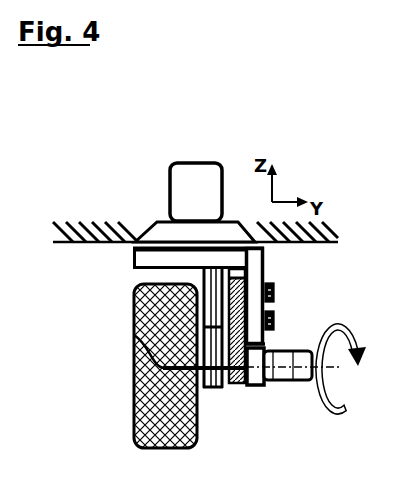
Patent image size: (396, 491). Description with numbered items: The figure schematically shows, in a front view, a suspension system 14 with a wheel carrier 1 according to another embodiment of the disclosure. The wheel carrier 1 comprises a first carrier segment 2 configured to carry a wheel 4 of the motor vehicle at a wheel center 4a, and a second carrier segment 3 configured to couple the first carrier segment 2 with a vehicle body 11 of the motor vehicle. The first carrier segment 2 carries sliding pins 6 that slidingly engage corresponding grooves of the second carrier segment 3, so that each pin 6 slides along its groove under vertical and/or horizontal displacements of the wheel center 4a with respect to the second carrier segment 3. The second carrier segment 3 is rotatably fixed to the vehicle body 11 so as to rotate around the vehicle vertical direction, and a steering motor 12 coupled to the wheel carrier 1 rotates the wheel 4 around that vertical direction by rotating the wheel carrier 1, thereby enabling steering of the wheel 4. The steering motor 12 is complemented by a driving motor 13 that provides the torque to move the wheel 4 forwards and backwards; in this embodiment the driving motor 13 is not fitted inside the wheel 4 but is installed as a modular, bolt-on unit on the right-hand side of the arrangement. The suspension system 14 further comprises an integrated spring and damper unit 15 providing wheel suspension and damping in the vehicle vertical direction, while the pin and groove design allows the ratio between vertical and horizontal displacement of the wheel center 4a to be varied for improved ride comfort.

The wheel carrier 1 is at (330, 279).
The first carrier segment 2 is at (232, 384).
The second carrier segment 3 is at (266, 261).
The wheel 4 is at (133, 415).
The wheel center 4a is at (134, 335).
The sliding pin 6 is at (275, 293).
The vehicle body 11 is at (80, 221).
The steering motor 12 is at (168, 214).
The driving motor 13 is at (295, 385).
The suspension system 14 is at (270, 107).
The integrated spring and damper unit 15 is at (210, 389).